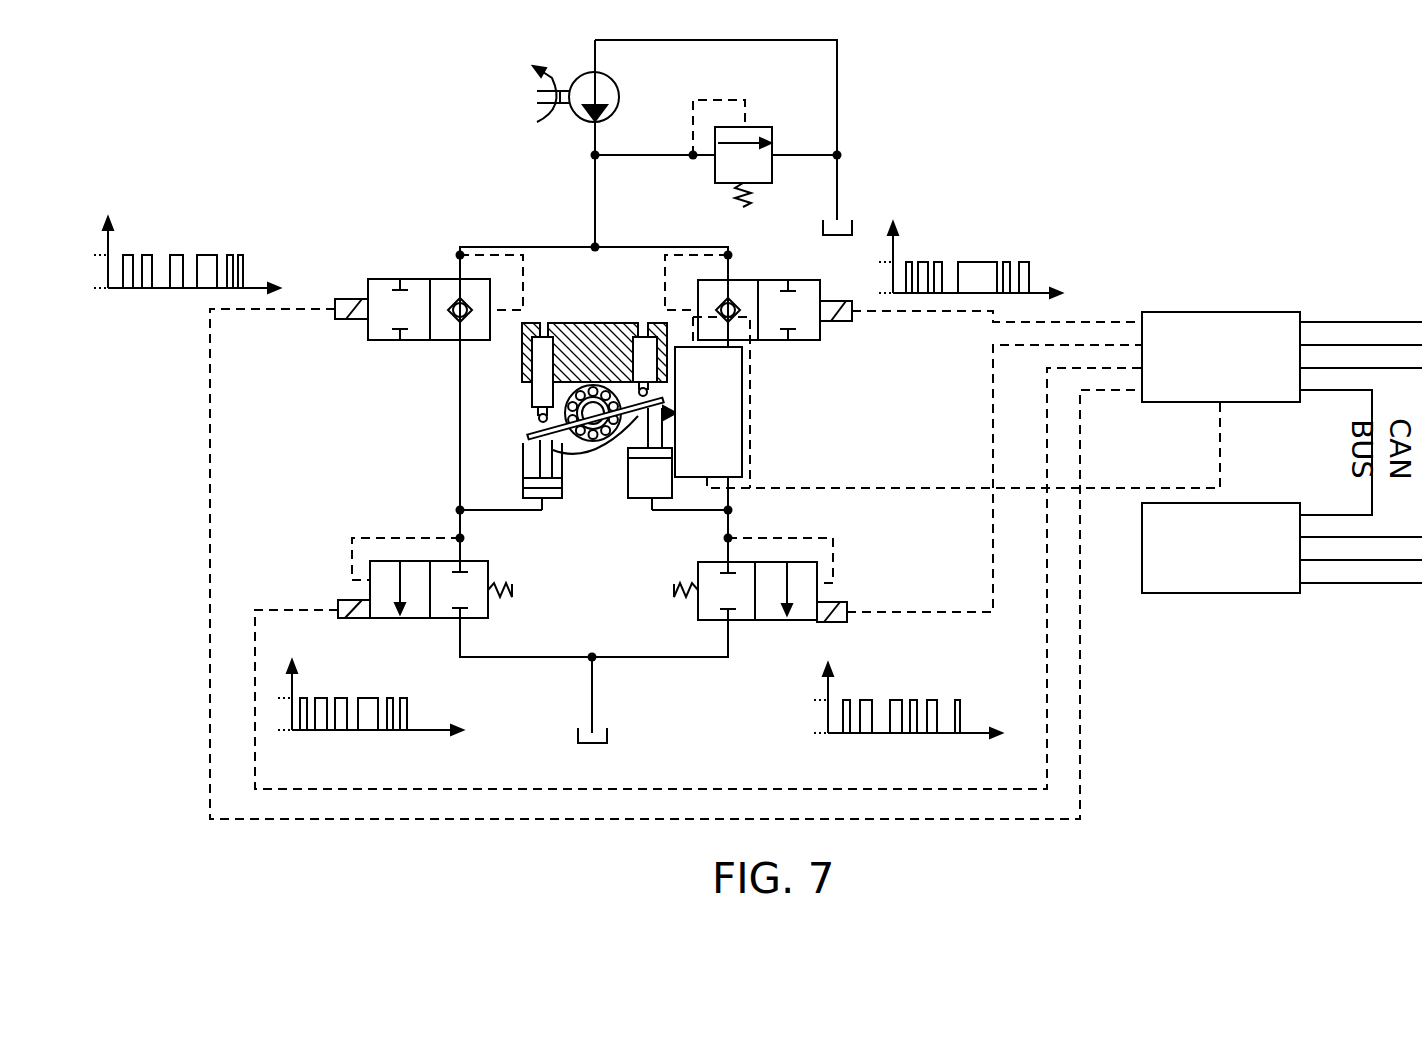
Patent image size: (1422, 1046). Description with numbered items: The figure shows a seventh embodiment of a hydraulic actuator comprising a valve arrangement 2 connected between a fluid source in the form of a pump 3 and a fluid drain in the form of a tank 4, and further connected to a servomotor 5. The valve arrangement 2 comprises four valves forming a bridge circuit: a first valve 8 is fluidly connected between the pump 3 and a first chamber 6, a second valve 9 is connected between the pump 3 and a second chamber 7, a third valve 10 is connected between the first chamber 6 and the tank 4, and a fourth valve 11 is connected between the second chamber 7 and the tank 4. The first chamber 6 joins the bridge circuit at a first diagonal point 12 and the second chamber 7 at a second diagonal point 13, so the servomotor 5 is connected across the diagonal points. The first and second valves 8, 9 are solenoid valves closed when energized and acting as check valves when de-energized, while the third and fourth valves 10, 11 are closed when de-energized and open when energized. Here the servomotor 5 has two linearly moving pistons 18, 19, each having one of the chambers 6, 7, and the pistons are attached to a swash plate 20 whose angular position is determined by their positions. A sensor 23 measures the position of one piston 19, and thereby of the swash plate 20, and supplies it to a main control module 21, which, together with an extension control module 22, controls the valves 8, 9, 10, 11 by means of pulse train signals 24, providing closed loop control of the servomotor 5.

The valve arrangement 2 is at (501, 244).
The pump 3 is at (580, 72).
The tank 4 is at (603, 743).
The servomotor 5 is at (587, 457).
The first chamber 6 is at (533, 492).
The second chamber 7 is at (655, 480).
The first valve 8 is at (417, 278).
The second valve 9 is at (768, 280).
The third valve 10 is at (413, 560).
The fourth valve 11 is at (738, 622).
The first diagonal point 12 is at (457, 508).
The second diagonal point 13 is at (725, 512).
The linearly moving piston 18 is at (535, 450).
The linearly moving piston 19 is at (640, 455).
The swash plate 20 is at (630, 322).
The main control module 21 is at (1190, 310).
The extension control module 22 is at (1202, 593).
The sensor 23 is at (742, 400).
The pulse train signals 24 is at (195, 243).